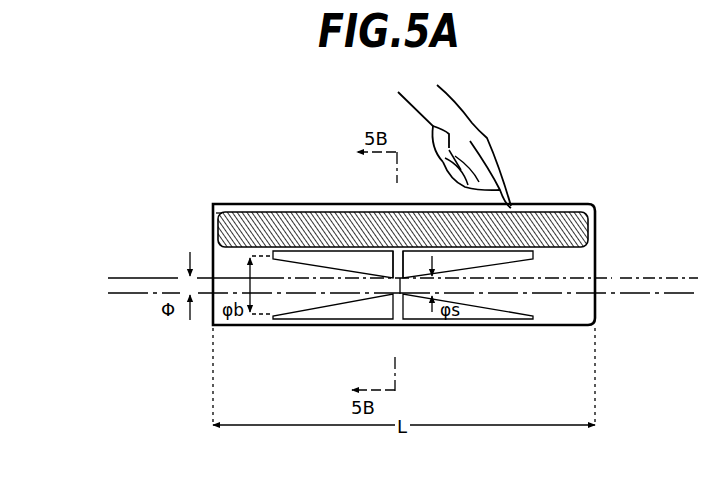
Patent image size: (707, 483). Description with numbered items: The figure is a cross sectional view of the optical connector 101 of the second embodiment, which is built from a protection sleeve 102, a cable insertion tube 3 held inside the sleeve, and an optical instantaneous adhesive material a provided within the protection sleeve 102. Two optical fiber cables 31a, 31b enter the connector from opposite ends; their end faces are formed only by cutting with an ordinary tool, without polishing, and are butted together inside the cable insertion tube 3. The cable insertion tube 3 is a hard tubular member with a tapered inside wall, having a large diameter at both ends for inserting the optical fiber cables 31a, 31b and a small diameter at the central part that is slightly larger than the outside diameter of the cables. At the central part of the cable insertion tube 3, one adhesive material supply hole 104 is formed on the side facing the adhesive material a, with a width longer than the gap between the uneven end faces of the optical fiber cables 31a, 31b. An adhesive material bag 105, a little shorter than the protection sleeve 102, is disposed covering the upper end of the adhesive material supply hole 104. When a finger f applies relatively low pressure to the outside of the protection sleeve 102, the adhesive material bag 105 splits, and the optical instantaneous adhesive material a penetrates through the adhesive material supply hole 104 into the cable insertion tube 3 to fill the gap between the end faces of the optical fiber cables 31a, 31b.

The optical connector 101 is at (344, 234).
The protection sleeve 102 is at (577, 205).
The adhesive material supply hole 104 is at (355, 227).
The adhesive material bag 105 is at (251, 208).
The cable insertion tube 3 is at (510, 326).
The optical fiber cable 31a is at (167, 278).
The optical fiber cable 31b is at (621, 279).
The optical instantaneous adhesive material a is at (217, 214).
The finger f is at (491, 143).